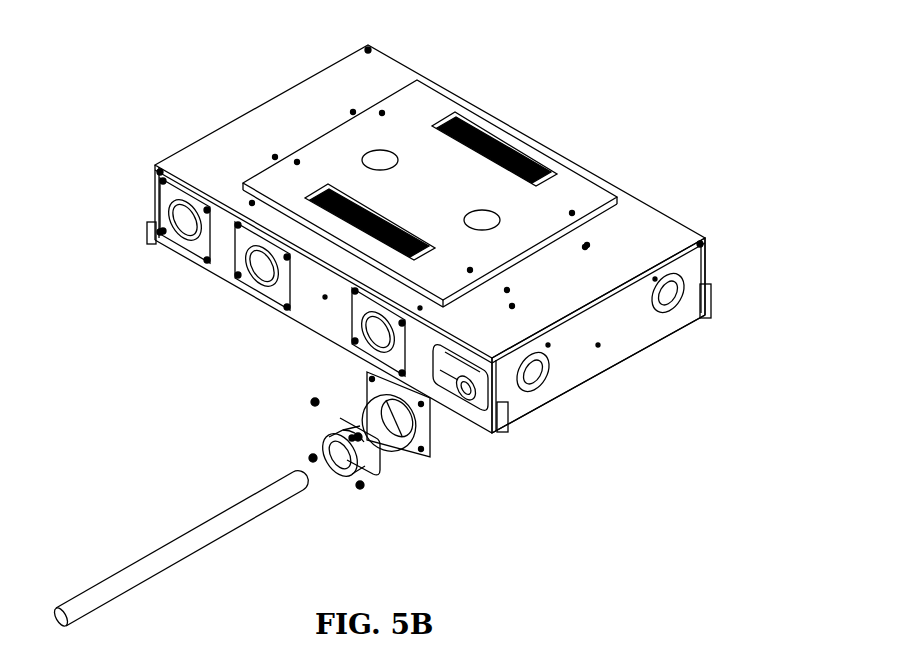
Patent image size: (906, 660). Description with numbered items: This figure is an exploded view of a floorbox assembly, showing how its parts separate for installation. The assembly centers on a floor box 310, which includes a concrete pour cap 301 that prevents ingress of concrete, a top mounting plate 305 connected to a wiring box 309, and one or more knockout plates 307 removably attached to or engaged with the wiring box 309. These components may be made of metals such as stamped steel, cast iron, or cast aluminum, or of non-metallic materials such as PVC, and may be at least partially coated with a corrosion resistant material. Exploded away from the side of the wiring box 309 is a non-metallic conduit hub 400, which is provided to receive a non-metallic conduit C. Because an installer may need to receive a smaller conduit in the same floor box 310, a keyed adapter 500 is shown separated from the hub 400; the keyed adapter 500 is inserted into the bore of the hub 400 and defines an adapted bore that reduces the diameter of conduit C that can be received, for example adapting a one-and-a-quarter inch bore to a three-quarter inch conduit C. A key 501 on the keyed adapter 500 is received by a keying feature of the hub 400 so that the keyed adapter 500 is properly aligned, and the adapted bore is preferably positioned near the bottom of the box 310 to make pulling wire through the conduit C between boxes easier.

The concrete pour cap 301 is at (190, 162).
The top mounting plate 305 is at (660, 240).
The knockout plates 307 is at (240, 278).
The wiring box 309 is at (598, 372).
The floor box 310 is at (690, 353).
The non-metallic conduit hub 400 is at (370, 383).
The keyed adapter 500 is at (372, 465).
The key 501 is at (337, 420).
The conduit C is at (175, 525).